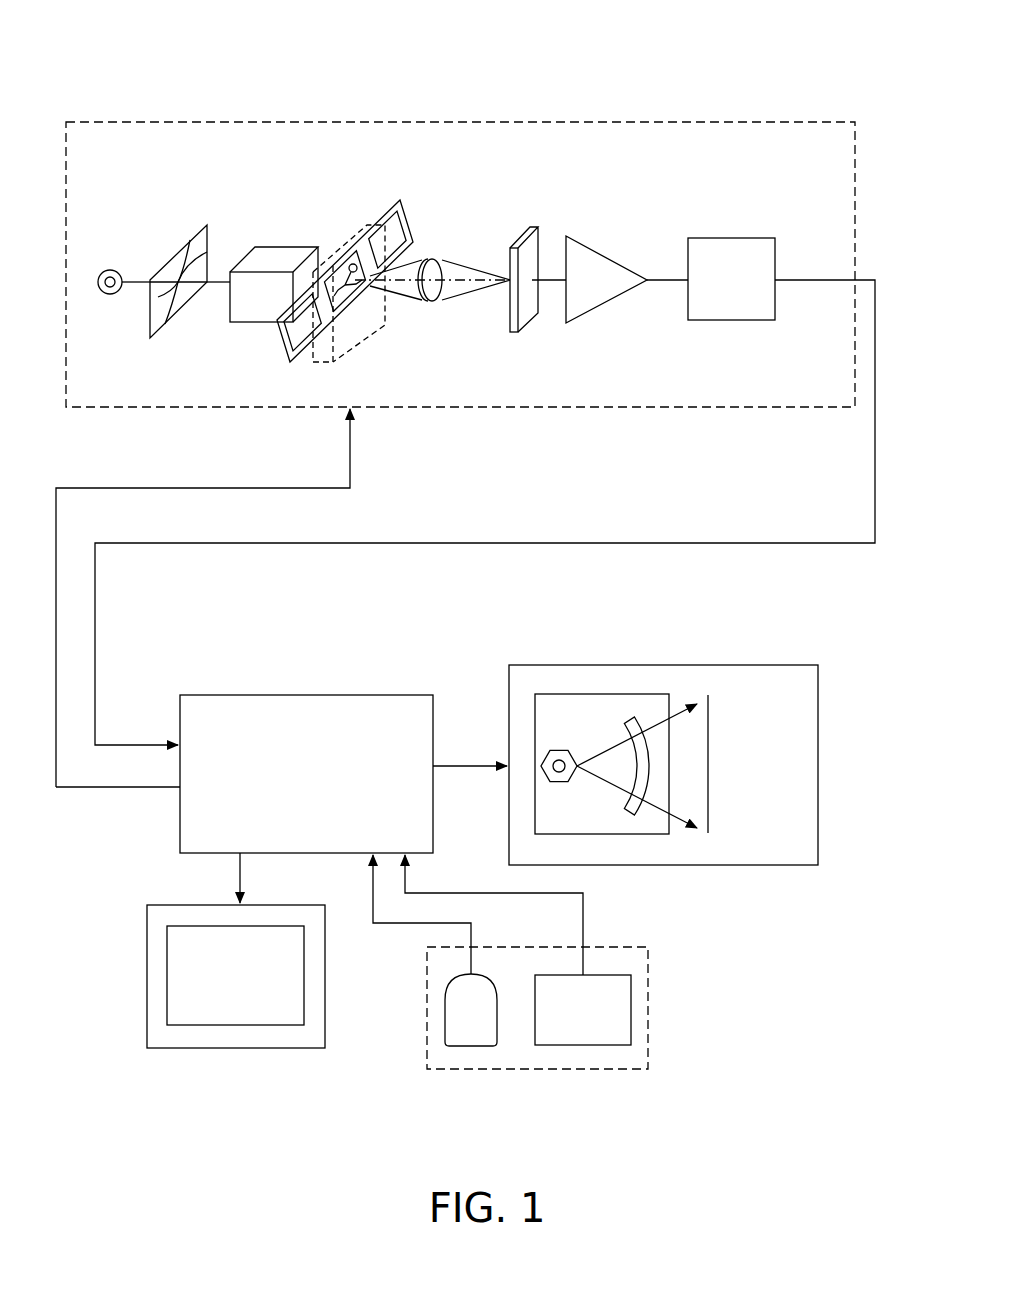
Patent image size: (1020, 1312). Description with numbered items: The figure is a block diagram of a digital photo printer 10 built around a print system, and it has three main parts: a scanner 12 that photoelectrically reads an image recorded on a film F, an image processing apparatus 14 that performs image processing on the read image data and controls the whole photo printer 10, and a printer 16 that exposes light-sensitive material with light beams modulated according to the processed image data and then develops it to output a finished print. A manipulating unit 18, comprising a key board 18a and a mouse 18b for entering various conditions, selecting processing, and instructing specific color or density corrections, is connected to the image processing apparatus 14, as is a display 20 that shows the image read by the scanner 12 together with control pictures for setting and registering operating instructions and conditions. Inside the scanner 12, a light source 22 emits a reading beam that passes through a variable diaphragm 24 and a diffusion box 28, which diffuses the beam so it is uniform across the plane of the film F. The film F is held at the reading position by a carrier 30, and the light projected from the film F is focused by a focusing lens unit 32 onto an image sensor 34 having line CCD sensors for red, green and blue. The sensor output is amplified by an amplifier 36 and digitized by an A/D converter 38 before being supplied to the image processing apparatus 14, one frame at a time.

The digital photo printer 10 is at (760, 70).
The scanner 12 is at (291, 120).
The image processing apparatus 14 is at (312, 694).
The printer 16 is at (668, 664).
The manipulating unit 18 is at (527, 1070).
The key board 18a is at (585, 1046).
The mouse 18b is at (470, 1047).
The display 20 is at (237, 1049).
The light source 22 is at (112, 269).
The variable diaphragm 24 is at (192, 238).
The diffusion box 28 is at (275, 258).
The film F is at (395, 205).
The carrier 30 is at (358, 322).
The focusing lens unit 32 is at (432, 258).
The image sensor 34 is at (534, 246).
The amplifier 36 is at (607, 255).
The A/D converter 38 is at (730, 237).